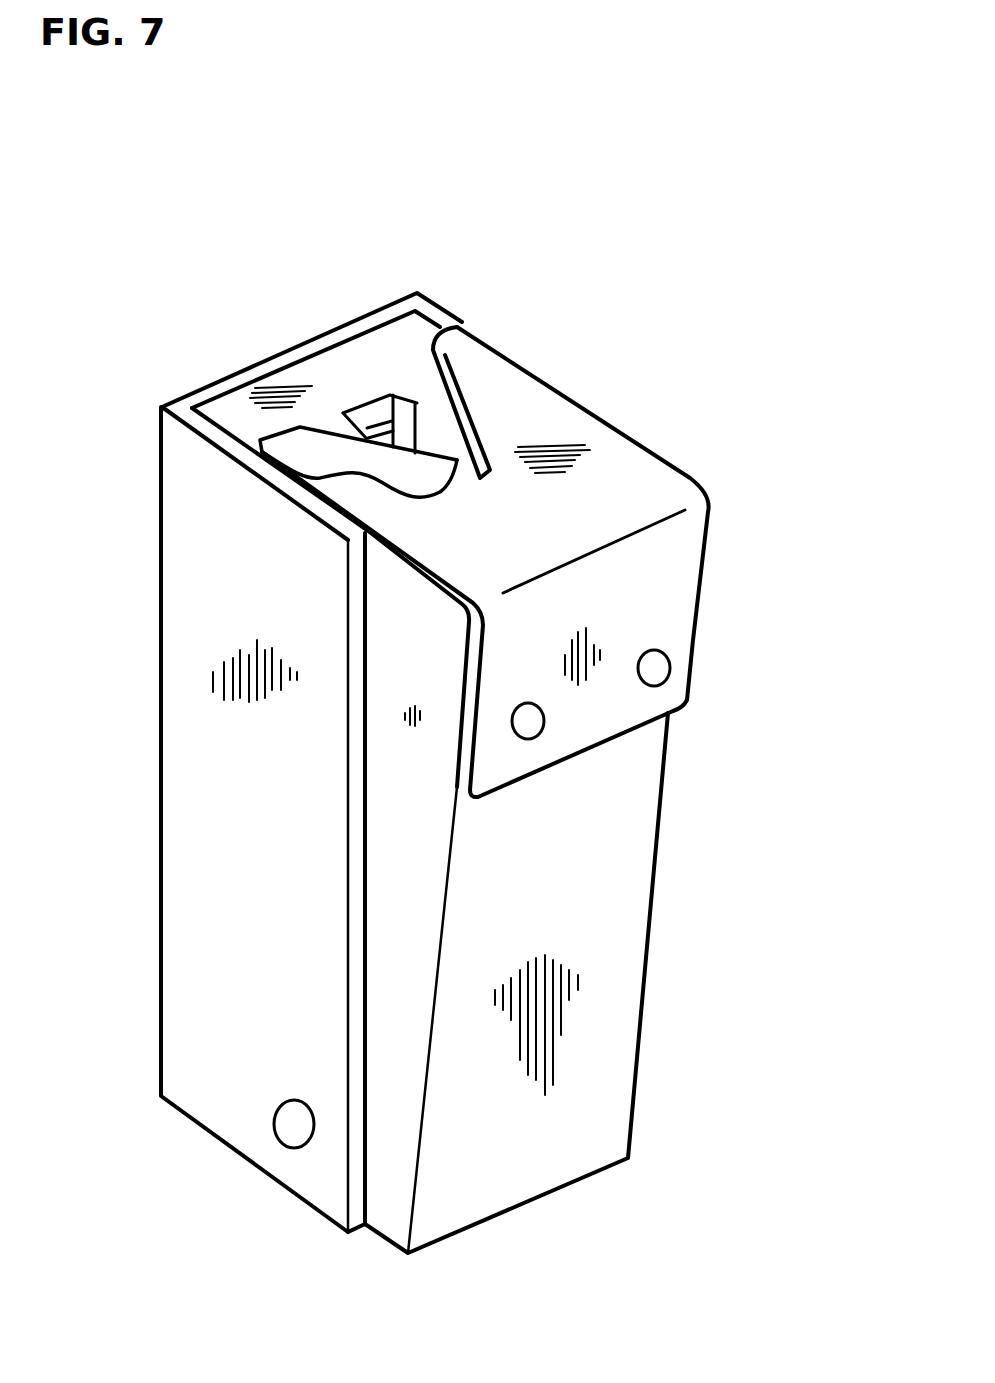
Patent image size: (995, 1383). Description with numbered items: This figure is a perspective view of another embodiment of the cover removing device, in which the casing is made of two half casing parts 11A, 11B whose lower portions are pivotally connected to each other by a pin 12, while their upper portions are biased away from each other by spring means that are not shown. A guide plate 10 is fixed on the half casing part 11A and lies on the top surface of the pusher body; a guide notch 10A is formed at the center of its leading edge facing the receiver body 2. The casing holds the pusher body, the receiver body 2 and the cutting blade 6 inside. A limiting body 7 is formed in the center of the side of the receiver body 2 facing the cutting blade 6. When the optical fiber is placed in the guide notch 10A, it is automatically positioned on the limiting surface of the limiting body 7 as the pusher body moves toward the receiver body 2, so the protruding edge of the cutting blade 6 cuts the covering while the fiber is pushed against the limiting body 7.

The receiver body 2 is at (340, 360).
The cutting blade 6 is at (317, 478).
The limiting body 7 is at (377, 410).
The guide plate 10 is at (627, 468).
The guide notch 10A is at (453, 425).
The half casing part 11A is at (620, 1008).
The half casing part 11B is at (180, 658).
The pin 12 is at (283, 1134).